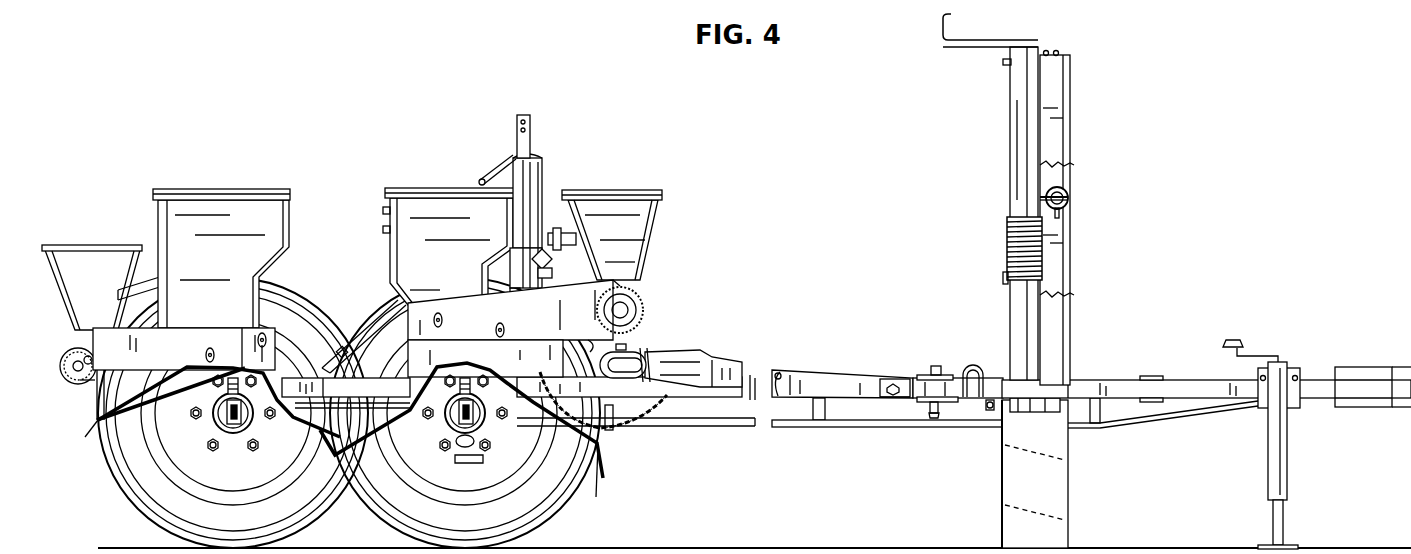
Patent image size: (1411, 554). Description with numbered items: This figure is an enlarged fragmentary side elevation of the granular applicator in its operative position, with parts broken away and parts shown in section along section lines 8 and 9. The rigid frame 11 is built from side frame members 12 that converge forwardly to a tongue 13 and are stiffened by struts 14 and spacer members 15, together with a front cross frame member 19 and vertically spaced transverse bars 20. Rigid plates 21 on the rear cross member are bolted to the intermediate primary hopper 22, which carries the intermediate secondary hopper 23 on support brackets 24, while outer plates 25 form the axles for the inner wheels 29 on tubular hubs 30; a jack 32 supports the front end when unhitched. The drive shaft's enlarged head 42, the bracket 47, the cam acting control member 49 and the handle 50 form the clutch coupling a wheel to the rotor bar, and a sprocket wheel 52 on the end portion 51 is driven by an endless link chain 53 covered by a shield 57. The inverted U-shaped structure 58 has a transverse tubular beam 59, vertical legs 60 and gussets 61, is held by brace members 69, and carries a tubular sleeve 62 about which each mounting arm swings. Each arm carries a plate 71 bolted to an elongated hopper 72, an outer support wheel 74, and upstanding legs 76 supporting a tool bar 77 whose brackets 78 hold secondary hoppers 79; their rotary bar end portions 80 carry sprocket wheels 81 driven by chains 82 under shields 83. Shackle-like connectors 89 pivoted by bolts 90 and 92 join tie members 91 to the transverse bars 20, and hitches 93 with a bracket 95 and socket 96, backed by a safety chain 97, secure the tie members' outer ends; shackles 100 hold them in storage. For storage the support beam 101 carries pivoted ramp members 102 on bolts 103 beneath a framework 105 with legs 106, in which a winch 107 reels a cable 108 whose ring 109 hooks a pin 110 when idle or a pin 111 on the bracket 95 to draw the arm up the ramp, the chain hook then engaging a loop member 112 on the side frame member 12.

The section line 8- 8 is at (343, 307).
The section line 9- 9 is at (233, 368).
The rigid frame 11 is at (1144, 374).
The side frame member 12 is at (1186, 388).
The tongue 13 is at (1396, 366).
The strut 14 is at (872, 430).
The spacer member 15 is at (818, 422).
The front cross frame member 19 is at (1163, 374).
The transverse bar 20 is at (920, 372).
The rigid plate 21 is at (296, 400).
The intermediate primary hopper 22 is at (243, 185).
The intermediate secondary hopper 23 is at (82, 243).
The support bracket 24 is at (128, 293).
The outer plate 25 is at (193, 377).
The inner wheel 29 is at (105, 437).
The tubular hub 30 is at (233, 436).
The jack 32 is at (1268, 470).
The enlarged head 42 is at (222, 425).
The bracket 47 is at (193, 412).
The control member 49 is at (474, 465).
The handle 50 is at (242, 432).
The end portion 51 is at (92, 361).
The sprocket wheel 52 is at (86, 380).
The endless link chain 53 is at (75, 385).
The shield 57 is at (198, 330).
The inverted U-shaped structure 58 is at (545, 160).
The transverse tubular beam 59 is at (535, 152).
The vertical leg 60 is at (541, 177).
The gusset 61 is at (500, 172).
The tubular sleeve 62 is at (512, 258).
The brace member 69 is at (383, 297).
The plate 71 is at (512, 357).
The elongated hopper 72 is at (412, 185).
The outer support wheel 74 is at (599, 472).
The upstanding leg 76 is at (546, 282).
The tool bar 77 is at (554, 262).
The bracket 78 is at (575, 238).
The secondary hopper 79 is at (657, 187).
The end portion 80 is at (628, 312).
The sprocket wheel 81 is at (636, 303).
The endless link chain 82 is at (642, 323).
The shield 83 is at (466, 302).
The shackle-like connector 89 is at (898, 378).
The pivot bolt 90 is at (943, 359).
The tie member 91 is at (797, 372).
The pivot bolt 92 is at (895, 392).
The hitch 93 is at (714, 360).
The bracket 95 is at (587, 336).
The socket 96 is at (604, 365).
The safety chain 97 is at (641, 425).
The shackle 100 is at (517, 136).
The support beam 101 is at (1031, 415).
The ramp member 102 is at (1012, 493).
The bolt 103 is at (990, 410).
The framework 105 is at (1053, 115).
The leg 106 is at (1055, 142).
The winch 107 is at (1017, 131).
The cable 108 is at (1012, 250).
The ring 109 is at (1070, 200).
The pin 110 is at (1062, 188).
The pin 111 is at (627, 348).
The loop member 112 is at (975, 362).